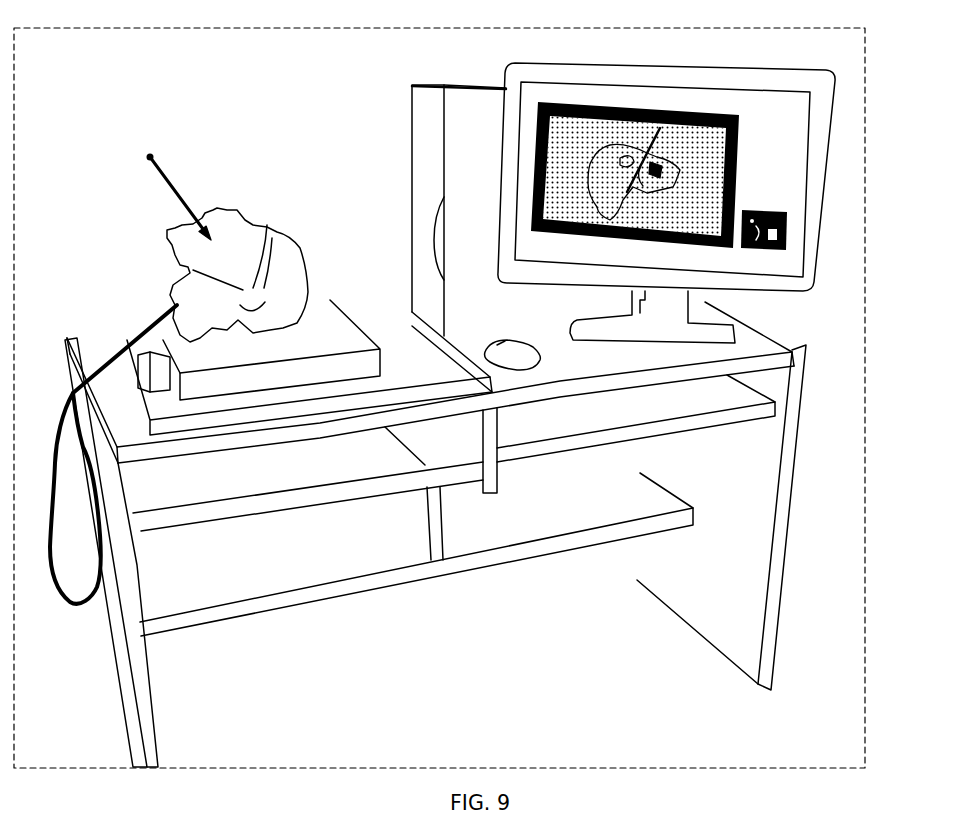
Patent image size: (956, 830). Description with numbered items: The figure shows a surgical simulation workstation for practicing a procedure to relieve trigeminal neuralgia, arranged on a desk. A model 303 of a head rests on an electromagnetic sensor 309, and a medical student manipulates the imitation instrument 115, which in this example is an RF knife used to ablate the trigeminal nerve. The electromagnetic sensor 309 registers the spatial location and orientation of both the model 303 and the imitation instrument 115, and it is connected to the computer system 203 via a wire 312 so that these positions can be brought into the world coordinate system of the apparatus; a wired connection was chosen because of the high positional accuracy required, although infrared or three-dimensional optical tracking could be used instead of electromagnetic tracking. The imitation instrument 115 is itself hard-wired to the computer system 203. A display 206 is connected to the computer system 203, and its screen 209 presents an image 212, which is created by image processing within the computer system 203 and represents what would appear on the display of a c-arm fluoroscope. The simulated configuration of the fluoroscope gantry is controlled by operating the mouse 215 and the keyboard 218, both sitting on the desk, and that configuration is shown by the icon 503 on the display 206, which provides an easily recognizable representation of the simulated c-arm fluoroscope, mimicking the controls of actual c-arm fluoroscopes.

The imitation instrument 115 is at (173, 178).
The computer system 203 is at (411, 99).
The display 206 is at (507, 74).
The display screen 209 is at (541, 90).
The image 212 is at (707, 186).
The mouse 215 is at (518, 333).
The keyboard 218 is at (308, 488).
The model 303 is at (293, 238).
The electromagnetic sensor 309 is at (335, 302).
The wire 312 is at (127, 336).
The icon 503 is at (787, 223).